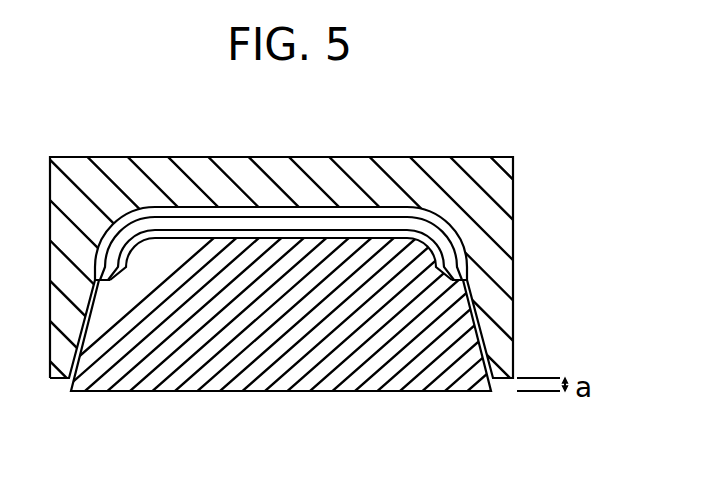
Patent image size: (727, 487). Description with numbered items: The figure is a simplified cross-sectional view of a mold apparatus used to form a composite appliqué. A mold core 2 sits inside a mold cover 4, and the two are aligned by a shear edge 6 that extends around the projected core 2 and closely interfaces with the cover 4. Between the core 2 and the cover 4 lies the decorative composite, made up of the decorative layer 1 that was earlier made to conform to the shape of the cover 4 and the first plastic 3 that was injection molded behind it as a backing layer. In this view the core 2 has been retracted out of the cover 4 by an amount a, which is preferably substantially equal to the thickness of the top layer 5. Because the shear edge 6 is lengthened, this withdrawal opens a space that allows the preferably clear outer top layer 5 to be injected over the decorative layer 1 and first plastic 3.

The decorative layer 1 is at (383, 223).
The mold core 2 is at (412, 378).
The first plastic 3 is at (287, 237).
The mold cover 4 is at (112, 167).
The top layer 5 is at (190, 211).
The shear edge 6 is at (488, 340).